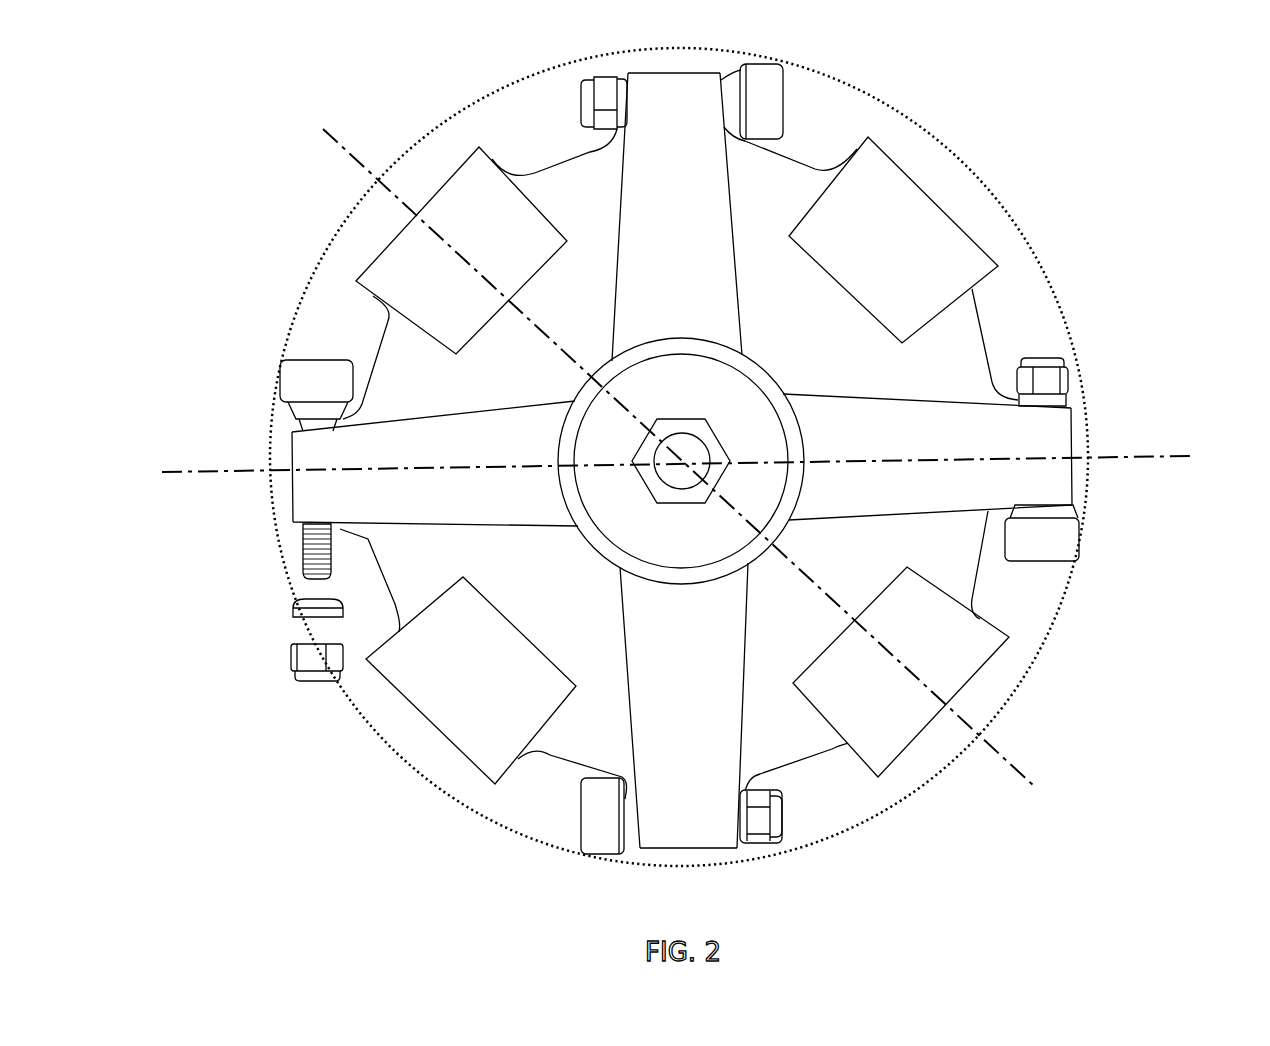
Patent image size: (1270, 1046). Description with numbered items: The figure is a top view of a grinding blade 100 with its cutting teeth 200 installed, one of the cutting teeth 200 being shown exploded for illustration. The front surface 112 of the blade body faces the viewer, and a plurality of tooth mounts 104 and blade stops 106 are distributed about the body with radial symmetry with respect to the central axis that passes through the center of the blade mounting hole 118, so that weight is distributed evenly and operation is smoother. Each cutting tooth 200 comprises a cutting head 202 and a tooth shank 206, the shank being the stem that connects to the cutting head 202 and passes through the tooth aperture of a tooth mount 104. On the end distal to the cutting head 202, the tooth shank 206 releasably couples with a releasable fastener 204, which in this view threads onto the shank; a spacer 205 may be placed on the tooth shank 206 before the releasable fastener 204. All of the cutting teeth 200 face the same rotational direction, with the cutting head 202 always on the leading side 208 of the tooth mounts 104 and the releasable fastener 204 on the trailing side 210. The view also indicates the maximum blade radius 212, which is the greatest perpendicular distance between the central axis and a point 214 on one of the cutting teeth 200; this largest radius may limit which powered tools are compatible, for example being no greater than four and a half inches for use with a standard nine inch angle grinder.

The grinding blade 100 is at (1157, 146).
The tooth mount 104 is at (652, 183).
The blade stop 106 is at (877, 248).
The front surface 112 is at (789, 348).
The blade mounting hole 118 is at (668, 482).
The cutting tooth 200 is at (806, 107).
The cutting head 202 is at (302, 382).
The releasable fastener 204 is at (294, 655).
The spacer 205 is at (292, 617).
The tooth shank 206 is at (305, 547).
The leading side 208 is at (968, 521).
The trailing side 210 is at (968, 403).
The maximum blade radius 212 is at (457, 115).
The point 214 is at (583, 858).